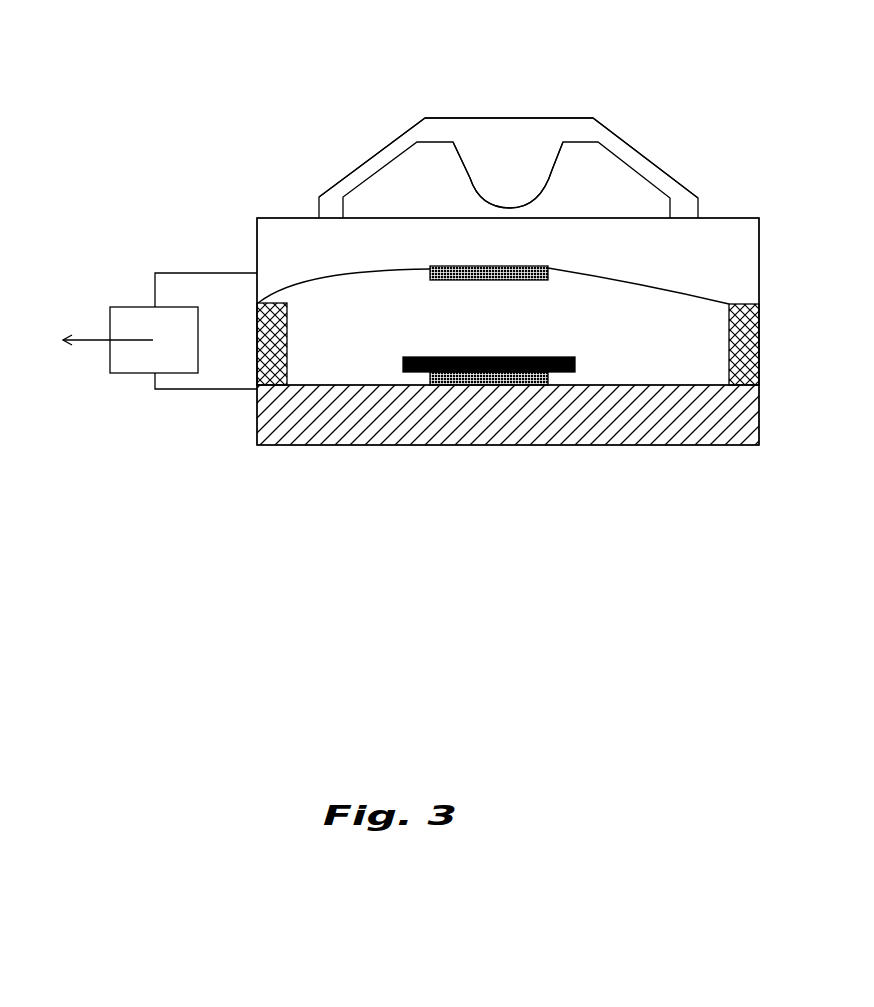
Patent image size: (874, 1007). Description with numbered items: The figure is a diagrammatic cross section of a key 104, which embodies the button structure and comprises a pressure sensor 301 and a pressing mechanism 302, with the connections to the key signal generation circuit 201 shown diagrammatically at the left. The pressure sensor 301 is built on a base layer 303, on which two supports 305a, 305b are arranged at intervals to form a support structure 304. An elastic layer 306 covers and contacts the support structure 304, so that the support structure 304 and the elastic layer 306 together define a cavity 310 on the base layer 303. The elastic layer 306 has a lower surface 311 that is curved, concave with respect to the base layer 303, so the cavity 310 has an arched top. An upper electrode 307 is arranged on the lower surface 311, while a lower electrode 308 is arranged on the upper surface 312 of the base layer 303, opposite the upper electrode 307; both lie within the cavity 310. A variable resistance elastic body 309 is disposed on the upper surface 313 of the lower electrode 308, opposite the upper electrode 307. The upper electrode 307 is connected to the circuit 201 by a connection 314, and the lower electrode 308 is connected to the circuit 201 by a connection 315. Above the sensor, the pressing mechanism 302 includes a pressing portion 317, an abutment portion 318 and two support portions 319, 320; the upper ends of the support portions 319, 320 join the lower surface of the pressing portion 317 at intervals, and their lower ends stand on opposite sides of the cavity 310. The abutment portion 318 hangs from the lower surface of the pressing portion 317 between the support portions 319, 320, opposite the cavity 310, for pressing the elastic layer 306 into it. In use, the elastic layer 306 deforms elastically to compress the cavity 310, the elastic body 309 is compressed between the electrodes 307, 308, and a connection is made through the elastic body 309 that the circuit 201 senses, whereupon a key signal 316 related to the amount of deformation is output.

The key 104 is at (104, 232).
The key signal generation circuit 201 is at (135, 372).
The pressure sensor 301 is at (733, 218).
The pressing mechanism 302 is at (672, 143).
The base layer 303 is at (752, 415).
The support structure 304 is at (757, 322).
The support 305a is at (278, 347).
The support 305b is at (757, 368).
The elastic layer 306 is at (755, 247).
The upper electrode 307 is at (447, 266).
The lower electrode 308 is at (453, 385).
The variable resistance elastic body 309 is at (567, 372).
The cavity 310 is at (620, 368).
The lower surface 311 is at (595, 273).
The upper surface 312 is at (693, 385).
The upper surface 313 is at (482, 385).
The connection 314 is at (181, 273).
The connection 315 is at (223, 390).
The key signal 316 is at (80, 343).
The pressing portion 317 is at (460, 130).
The abutment portion 318 is at (522, 188).
The support portion 319 is at (368, 160).
The support portion 320 is at (655, 168).